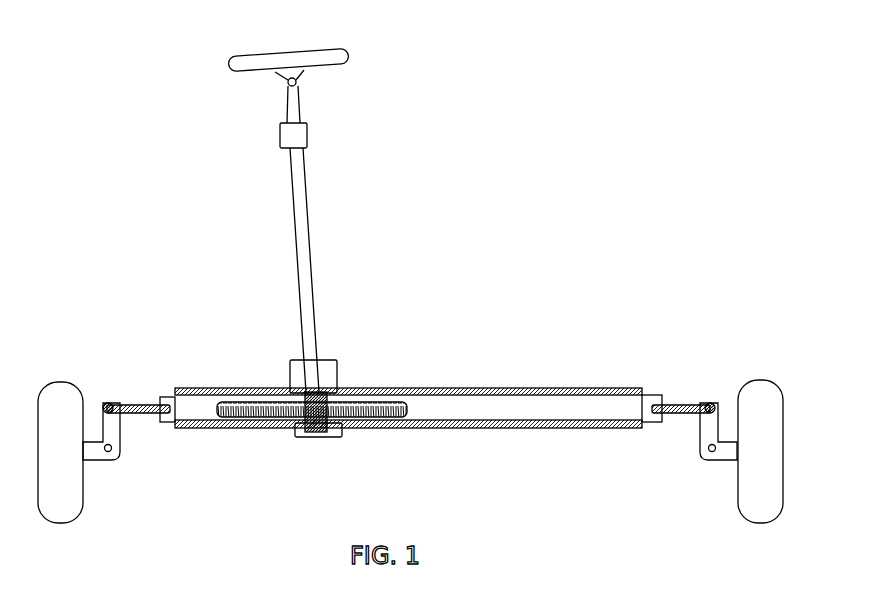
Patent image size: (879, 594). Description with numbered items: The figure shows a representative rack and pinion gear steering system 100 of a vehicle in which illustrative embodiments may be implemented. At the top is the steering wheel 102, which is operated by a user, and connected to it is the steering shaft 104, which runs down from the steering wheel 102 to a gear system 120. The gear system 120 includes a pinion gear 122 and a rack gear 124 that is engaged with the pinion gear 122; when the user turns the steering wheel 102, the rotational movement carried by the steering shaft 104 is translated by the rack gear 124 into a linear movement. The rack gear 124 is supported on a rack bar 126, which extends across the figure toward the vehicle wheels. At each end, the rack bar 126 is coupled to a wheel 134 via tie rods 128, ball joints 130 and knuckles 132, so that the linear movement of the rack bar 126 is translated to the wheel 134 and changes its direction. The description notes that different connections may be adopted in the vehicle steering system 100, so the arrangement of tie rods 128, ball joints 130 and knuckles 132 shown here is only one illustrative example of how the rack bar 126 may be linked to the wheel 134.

The steering system 100 is at (497, 119).
The steering wheel 102 is at (346, 55).
The steering shaft 104 is at (305, 218).
The gear system 120 is at (339, 378).
The pinion gear 122 is at (303, 437).
The rack gear 124 is at (403, 432).
The rack bar 126 is at (552, 433).
The tie rods 128 is at (142, 405).
The ball joints 130 is at (108, 402).
The knuckles 132 is at (117, 428).
The wheel 134 is at (58, 380).